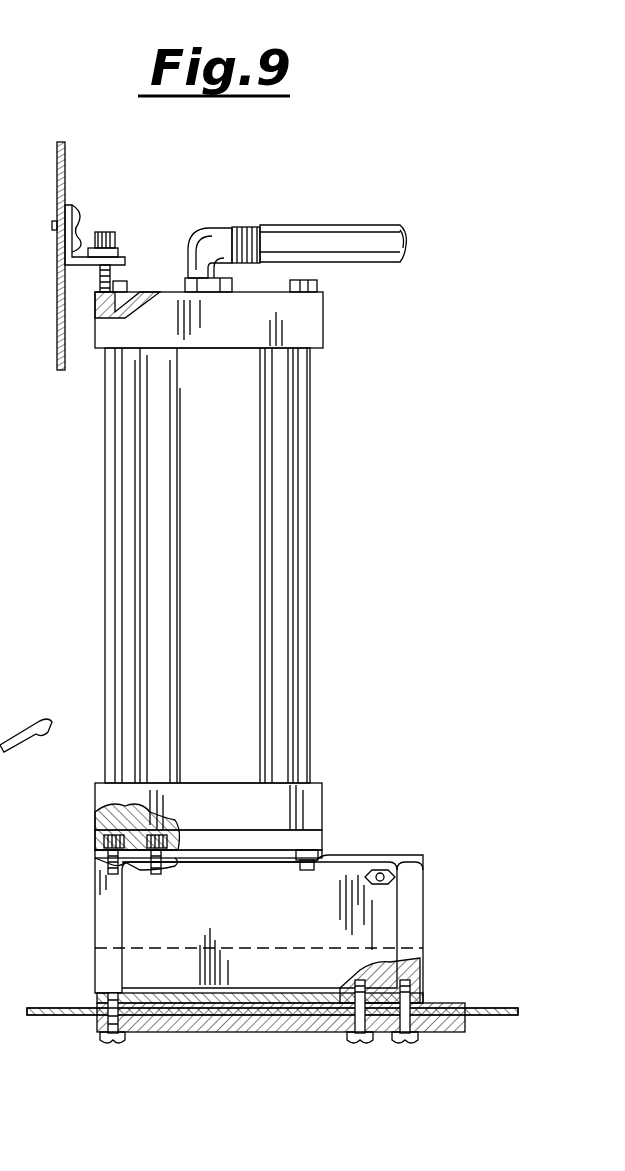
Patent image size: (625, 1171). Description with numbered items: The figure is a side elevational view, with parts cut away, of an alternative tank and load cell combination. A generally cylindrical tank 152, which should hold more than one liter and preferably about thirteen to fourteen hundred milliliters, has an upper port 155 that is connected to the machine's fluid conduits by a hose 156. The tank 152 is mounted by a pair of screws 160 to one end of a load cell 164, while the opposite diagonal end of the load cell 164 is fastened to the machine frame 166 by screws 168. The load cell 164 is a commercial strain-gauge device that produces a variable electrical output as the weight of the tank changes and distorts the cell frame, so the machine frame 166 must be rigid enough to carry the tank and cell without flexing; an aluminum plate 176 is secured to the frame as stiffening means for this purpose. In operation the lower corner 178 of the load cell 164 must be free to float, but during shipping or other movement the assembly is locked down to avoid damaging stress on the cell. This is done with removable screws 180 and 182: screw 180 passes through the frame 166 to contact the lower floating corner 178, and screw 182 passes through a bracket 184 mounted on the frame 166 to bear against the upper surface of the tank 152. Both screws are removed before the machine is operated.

The tank 152 is at (226, 580).
The upper port 155 is at (212, 228).
The hose 156 is at (356, 228).
The screws 160 is at (106, 852).
The load cell 164 is at (424, 892).
The machine frame 166 is at (66, 176).
The screws 168 is at (406, 1044).
The aluminum plate 176 is at (256, 1034).
The lower corner 178 is at (98, 1000).
The screw 180 is at (120, 1042).
The screw 182 is at (110, 272).
The bracket 184 is at (74, 255).